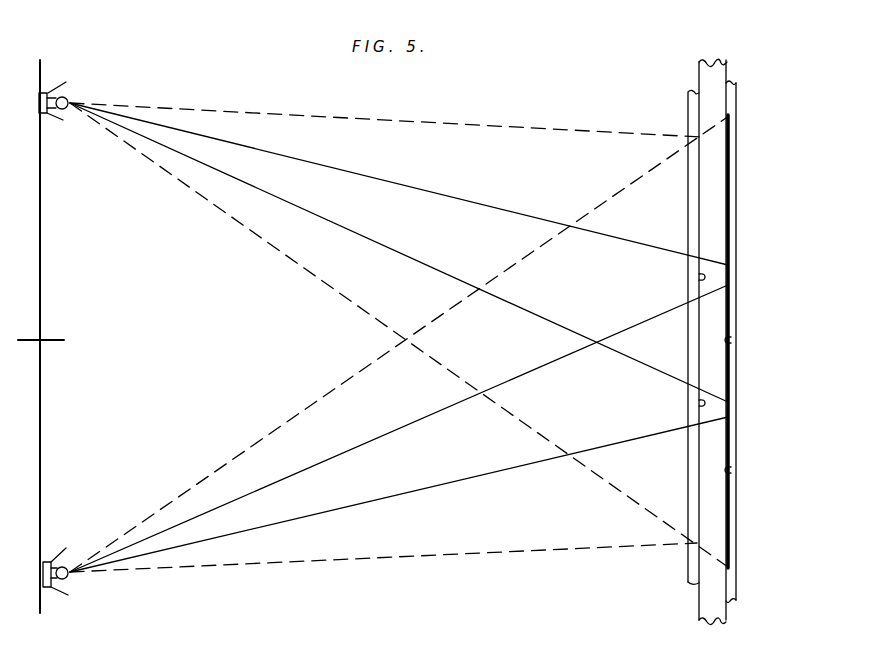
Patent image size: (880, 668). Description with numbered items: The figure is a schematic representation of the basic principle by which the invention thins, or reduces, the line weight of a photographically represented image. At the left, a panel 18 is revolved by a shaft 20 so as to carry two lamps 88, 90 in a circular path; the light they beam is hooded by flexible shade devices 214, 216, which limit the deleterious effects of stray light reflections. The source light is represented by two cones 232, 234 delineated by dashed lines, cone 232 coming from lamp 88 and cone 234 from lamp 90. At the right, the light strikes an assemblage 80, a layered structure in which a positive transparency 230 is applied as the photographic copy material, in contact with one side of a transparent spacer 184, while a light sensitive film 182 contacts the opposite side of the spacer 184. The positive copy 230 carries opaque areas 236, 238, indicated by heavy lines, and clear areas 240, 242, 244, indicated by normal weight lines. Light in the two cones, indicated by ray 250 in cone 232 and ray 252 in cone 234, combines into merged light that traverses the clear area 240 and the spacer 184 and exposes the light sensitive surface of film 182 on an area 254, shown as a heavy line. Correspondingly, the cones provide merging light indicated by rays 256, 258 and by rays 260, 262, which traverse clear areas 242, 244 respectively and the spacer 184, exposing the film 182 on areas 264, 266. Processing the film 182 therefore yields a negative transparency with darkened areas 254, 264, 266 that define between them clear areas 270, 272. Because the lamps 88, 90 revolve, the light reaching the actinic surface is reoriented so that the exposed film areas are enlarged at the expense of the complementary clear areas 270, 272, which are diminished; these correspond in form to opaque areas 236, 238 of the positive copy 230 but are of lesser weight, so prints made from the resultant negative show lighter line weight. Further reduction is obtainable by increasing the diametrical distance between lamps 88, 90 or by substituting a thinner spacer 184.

The panel 18 is at (74, 236).
The shaft 20 is at (57, 338).
The assemblage 80 is at (702, 336).
The lamp 88 is at (69, 96).
The lamp 90 is at (68, 579).
The flexible shade device 214 is at (55, 121).
The flexible shade device 216 is at (58, 558).
The light sensitive film 182 is at (735, 101).
The transparent spacer 184 is at (716, 80).
The positive transparency 230 is at (688, 95).
The cone 232 is at (532, 170).
The cone 234 is at (568, 513).
The opaque area 236 is at (699, 277).
The opaque area 238 is at (699, 403).
The clear area 240 is at (698, 197).
The clear area 242 is at (698, 339).
The clear area 244 is at (698, 470).
The ray 250 is at (522, 214).
The ray 252 is at (335, 388).
The exposed area 254 is at (728, 204).
The ray 256 is at (403, 256).
The ray 258 is at (404, 425).
The ray 260 is at (334, 292).
The ray 262 is at (409, 494).
The exposed area 264 is at (731, 340).
The exposed area 266 is at (731, 470).
The clear area 270 is at (736, 273).
The clear area 272 is at (736, 406).